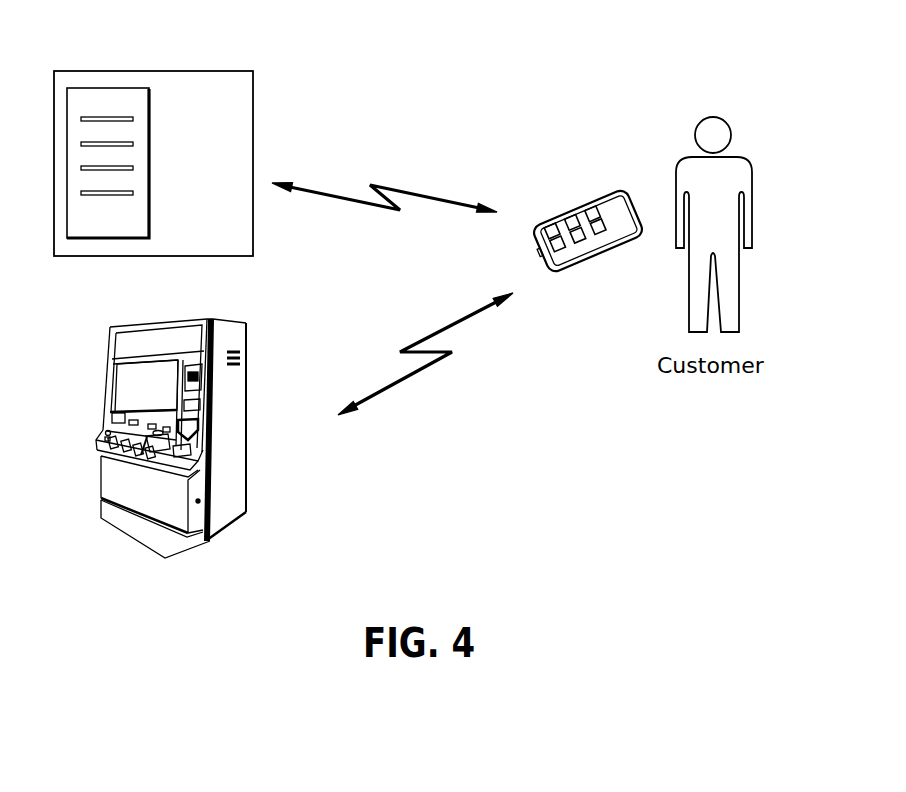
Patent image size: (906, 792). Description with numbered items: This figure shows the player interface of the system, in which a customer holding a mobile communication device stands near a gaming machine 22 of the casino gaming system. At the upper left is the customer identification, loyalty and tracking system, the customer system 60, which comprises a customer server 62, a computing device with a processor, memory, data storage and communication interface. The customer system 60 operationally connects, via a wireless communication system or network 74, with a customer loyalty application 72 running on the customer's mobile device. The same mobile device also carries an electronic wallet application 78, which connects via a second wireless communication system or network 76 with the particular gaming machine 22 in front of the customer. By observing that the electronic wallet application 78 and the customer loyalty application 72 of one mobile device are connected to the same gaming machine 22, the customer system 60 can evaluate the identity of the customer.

The gaming machine 22 is at (247, 460).
The customer system 60 is at (185, 70).
The customer server 62 is at (95, 88).
The customer loyalty application 72 is at (561, 251).
The wireless communication system or network 74 is at (435, 198).
The wireless communication system or network 76 is at (397, 382).
The electronic wallet application 78 is at (581, 241).